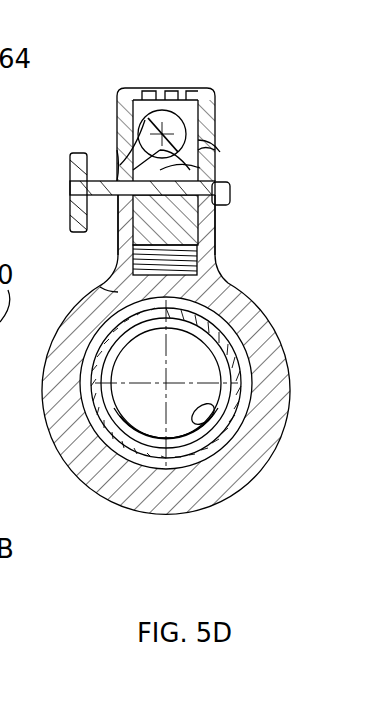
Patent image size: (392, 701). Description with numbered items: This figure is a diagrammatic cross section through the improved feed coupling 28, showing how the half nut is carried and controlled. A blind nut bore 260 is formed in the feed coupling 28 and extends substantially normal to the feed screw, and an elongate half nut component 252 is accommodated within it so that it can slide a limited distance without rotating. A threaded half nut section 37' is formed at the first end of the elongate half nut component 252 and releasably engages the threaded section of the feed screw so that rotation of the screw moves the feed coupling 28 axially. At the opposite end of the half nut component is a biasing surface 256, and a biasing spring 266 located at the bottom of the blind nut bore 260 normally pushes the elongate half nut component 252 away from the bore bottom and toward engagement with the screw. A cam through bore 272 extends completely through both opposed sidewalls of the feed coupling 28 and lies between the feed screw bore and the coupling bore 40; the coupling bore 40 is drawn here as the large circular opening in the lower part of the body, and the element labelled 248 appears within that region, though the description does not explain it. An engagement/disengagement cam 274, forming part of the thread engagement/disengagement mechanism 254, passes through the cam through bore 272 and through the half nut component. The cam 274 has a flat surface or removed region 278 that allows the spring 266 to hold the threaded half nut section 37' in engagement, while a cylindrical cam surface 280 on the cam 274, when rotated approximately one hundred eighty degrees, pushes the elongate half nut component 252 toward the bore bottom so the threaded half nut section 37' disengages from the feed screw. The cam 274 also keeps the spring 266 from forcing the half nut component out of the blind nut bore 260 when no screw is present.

The coupling bore 40 is at (202, 354).
The biasing surface 256 is at (200, 359).
The tube / bore 248 is at (236, 383).
The biasing spring 266 is at (74, 294).
The elongate half nut component 252 is at (188, 225).
The feed coupling 28 is at (209, 225).
The blind nut bore 260 is at (166, 114).
The thread engagement/disengagement mechanism 254 is at (228, 99).
The threaded half nut section 37' is at (240, 134).
The cylindrical cam surface 280 is at (252, 149).
The engagement/disengagement cam 274 is at (115, 191).
The flat surface or removed region 278 is at (43, 197).
The cam through bore 272 is at (79, 148).